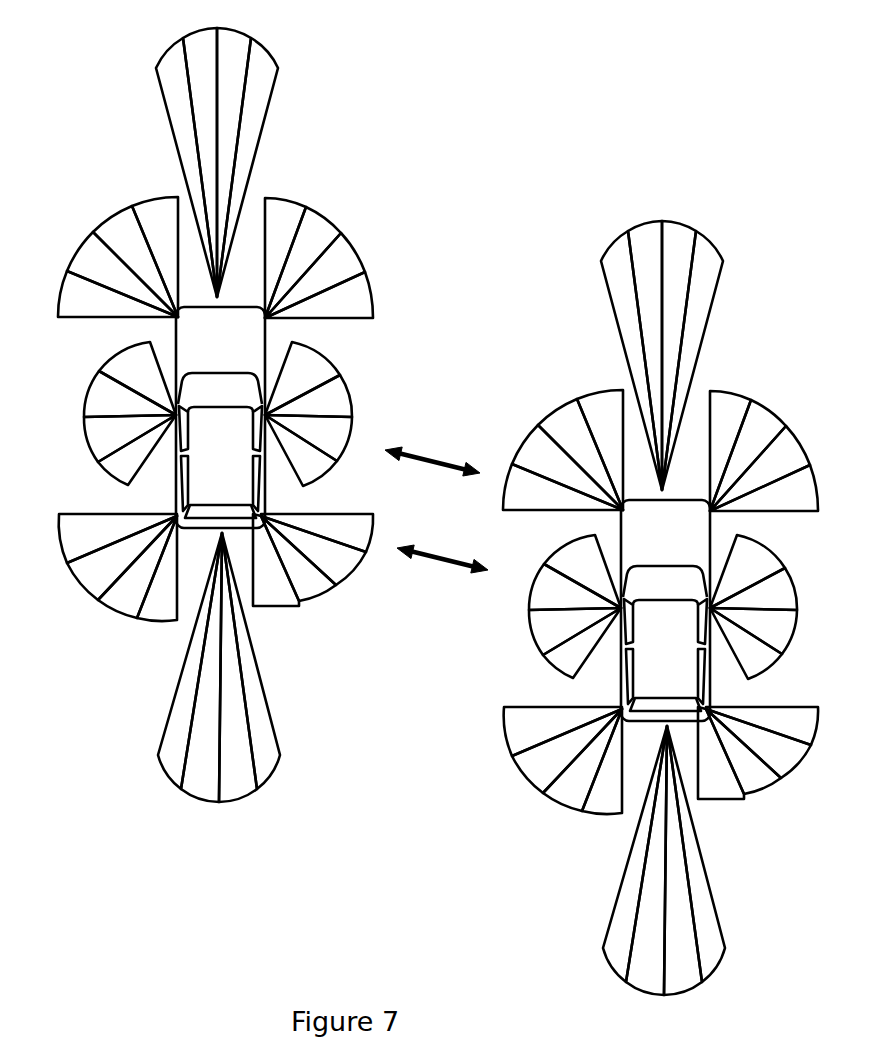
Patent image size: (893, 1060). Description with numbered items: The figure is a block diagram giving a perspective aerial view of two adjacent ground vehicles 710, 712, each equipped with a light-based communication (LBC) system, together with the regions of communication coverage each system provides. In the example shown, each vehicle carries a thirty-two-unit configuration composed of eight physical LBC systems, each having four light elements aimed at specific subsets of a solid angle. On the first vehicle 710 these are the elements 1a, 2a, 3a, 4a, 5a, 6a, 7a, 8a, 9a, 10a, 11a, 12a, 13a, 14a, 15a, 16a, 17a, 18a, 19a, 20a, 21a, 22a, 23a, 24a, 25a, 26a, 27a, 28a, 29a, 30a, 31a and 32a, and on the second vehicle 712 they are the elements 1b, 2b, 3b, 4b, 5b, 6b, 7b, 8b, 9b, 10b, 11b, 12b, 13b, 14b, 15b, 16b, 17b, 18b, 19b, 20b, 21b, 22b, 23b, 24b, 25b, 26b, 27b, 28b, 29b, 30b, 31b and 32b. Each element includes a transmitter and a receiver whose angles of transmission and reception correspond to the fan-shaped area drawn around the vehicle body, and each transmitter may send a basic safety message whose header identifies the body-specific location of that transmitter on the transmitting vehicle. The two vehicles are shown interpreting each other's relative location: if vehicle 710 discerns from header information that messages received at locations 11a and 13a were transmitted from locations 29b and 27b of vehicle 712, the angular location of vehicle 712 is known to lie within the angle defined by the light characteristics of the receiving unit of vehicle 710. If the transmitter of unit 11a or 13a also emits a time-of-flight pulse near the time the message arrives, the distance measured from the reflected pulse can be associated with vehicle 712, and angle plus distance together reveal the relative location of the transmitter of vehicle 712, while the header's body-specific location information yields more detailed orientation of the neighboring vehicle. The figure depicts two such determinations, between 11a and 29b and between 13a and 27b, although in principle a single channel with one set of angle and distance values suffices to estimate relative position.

The light element 1a is at (180, 159).
The light element 2a is at (200, 152).
The light element 3a is at (234, 152).
The light element 4a is at (253, 156).
The light element 5a is at (285, 246).
The light element 6a is at (305, 254).
The light element 7a is at (326, 274).
The light element 8a is at (333, 295).
The light element 9a is at (309, 375).
The light element 10a is at (328, 396).
The light element 11a is at (326, 438).
The light element 12a is at (312, 458).
The light element 13a is at (338, 532).
The light element 14a is at (330, 551).
The light element 15a is at (306, 565).
The light element 16a is at (278, 574).
The light element 17a is at (265, 666).
The light element 18a is at (241, 678).
The light element 19a is at (201, 678).
The light element 20a is at (172, 666).
The light element 21a is at (157, 582).
The light element 22a is at (134, 577).
The light element 23a is at (108, 559).
The light element 24a is at (98, 538).
The light element 25a is at (121, 455).
The light element 26a is at (110, 438).
The light element 27a is at (112, 394).
The light element 28a is at (130, 374).
The light element 29a is at (99, 294).
The light element 30a is at (107, 274).
The light element 31a is at (127, 256).
The light element 32a is at (155, 246).
The vehicle 710 is at (220, 417).
The light element 1b is at (625, 352).
The light element 2b is at (645, 345).
The light element 3b is at (679, 345).
The light element 4b is at (698, 349).
The light element 5b is at (730, 439).
The light element 6b is at (750, 447).
The light element 7b is at (771, 467).
The light element 8b is at (778, 488).
The light element 9b is at (754, 568).
The light element 10b is at (773, 589).
The light element 11b is at (771, 631).
The light element 12b is at (757, 651).
The light element 13b is at (783, 725).
The light element 14b is at (775, 744).
The light element 15b is at (751, 758).
The light element 16b is at (723, 767).
The light element 17b is at (710, 859).
The light element 18b is at (686, 871).
The light element 19b is at (646, 871).
The light element 20b is at (617, 859).
The light element 21b is at (602, 775).
The light element 22b is at (579, 770).
The light element 23b is at (553, 752).
The light element 24b is at (543, 731).
The light element 25b is at (566, 648).
The light element 26b is at (555, 631).
The light element 27b is at (557, 587).
The light element 28b is at (575, 567).
The light element 29b is at (544, 487).
The light element 30b is at (552, 467).
The light element 31b is at (572, 449).
The light element 32b is at (600, 439).
The vehicle 712 is at (665, 610).